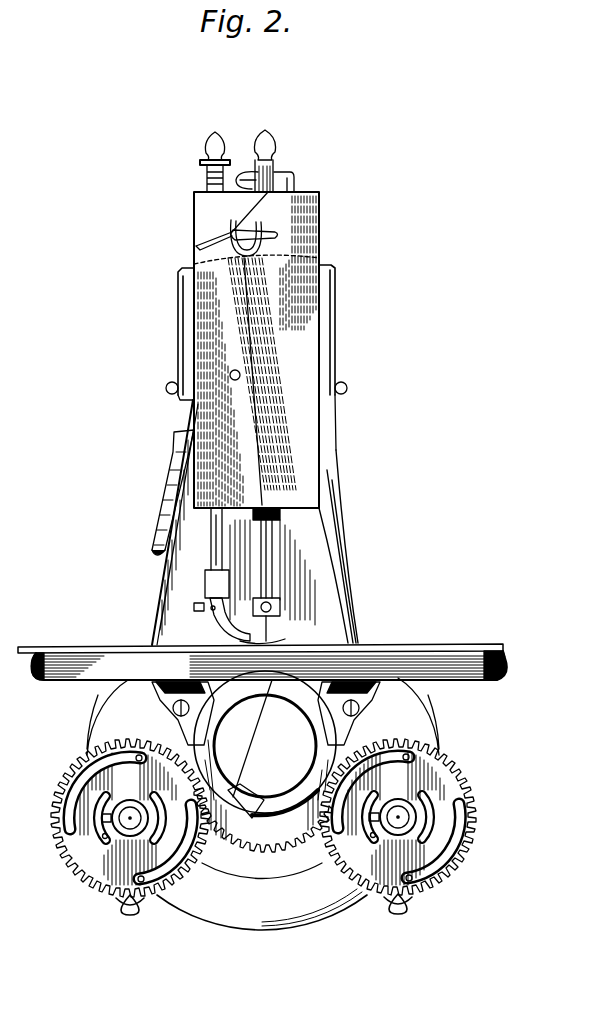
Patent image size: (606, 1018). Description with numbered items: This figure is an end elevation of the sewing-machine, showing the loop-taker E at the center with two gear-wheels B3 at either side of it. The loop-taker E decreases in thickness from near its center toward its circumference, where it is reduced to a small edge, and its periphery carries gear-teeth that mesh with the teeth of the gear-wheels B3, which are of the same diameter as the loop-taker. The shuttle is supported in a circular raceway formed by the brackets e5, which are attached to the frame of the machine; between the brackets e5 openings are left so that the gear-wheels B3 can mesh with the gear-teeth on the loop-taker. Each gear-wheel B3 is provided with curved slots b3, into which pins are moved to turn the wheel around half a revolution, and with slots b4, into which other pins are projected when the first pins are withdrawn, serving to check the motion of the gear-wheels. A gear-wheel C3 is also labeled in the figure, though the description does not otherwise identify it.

The loop-taker E is at (265, 744).
The brackets e5 is at (165, 720).
The gear-wheels B3 is at (135, 848).
The gear wheel C3 is at (363, 840).
The curved slots b3 is at (95, 836).
The slots b4 is at (68, 818).